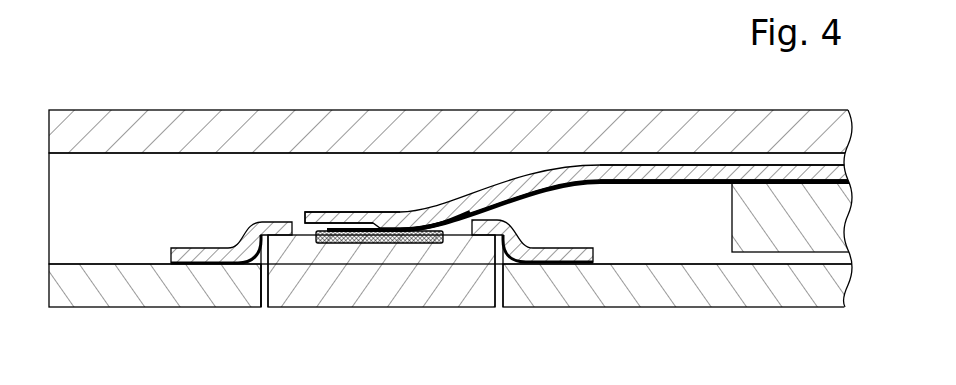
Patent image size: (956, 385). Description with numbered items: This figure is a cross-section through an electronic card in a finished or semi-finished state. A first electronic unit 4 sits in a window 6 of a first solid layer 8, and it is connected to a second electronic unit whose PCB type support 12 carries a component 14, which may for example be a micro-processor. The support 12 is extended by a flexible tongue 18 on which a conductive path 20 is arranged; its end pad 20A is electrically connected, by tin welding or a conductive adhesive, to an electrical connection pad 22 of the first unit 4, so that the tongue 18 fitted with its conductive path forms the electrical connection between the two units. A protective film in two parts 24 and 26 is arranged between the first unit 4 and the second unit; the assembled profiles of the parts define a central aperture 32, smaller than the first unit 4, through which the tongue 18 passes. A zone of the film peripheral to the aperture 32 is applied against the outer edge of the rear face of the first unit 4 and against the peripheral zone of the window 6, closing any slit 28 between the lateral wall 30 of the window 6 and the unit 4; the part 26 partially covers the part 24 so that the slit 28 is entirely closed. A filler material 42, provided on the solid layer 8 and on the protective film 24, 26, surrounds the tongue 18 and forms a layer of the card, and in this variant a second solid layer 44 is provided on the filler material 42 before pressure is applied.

The first electronic unit 4 is at (406, 292).
The window 6 is at (261, 281).
The first solid layer 8 is at (92, 280).
The PCB type support 12 is at (663, 178).
The component 14 is at (777, 218).
The tongue 18 is at (487, 195).
The conductive path 20 is at (635, 184).
The end pad of conductive path 20A is at (375, 225).
The electrical connection pads 22 is at (364, 244).
The protective film part 24 is at (551, 257).
The protective film part 26 is at (188, 257).
The slit 28 is at (500, 309).
The lateral wall 30 is at (262, 257).
The central aperture 32 is at (298, 218).
The filler material 42 is at (123, 187).
The second solid layer 44 is at (578, 132).